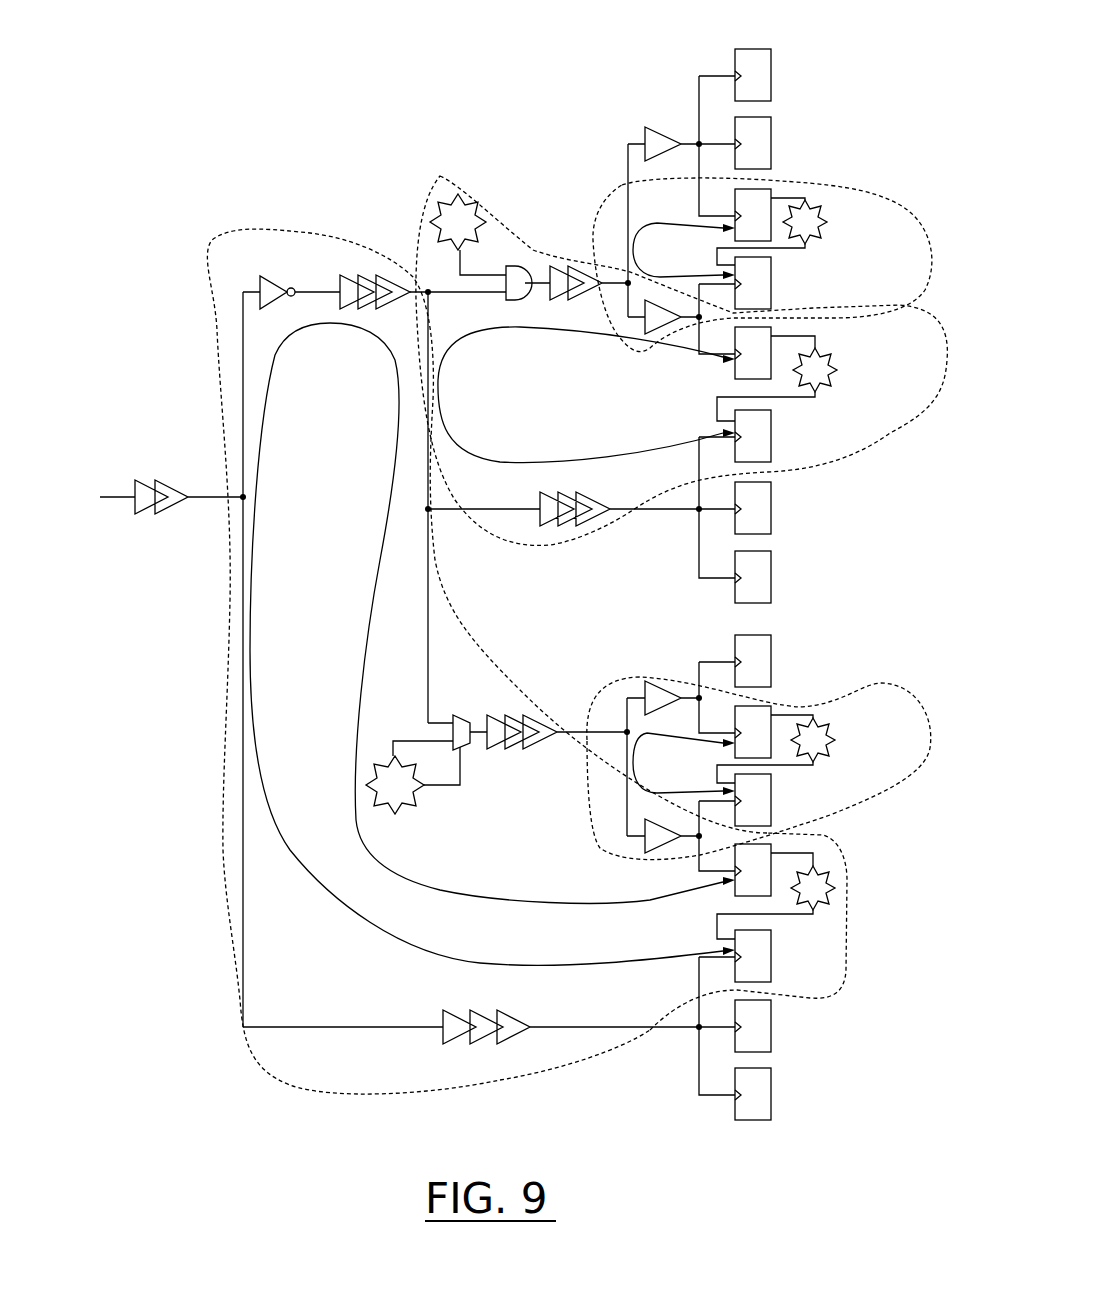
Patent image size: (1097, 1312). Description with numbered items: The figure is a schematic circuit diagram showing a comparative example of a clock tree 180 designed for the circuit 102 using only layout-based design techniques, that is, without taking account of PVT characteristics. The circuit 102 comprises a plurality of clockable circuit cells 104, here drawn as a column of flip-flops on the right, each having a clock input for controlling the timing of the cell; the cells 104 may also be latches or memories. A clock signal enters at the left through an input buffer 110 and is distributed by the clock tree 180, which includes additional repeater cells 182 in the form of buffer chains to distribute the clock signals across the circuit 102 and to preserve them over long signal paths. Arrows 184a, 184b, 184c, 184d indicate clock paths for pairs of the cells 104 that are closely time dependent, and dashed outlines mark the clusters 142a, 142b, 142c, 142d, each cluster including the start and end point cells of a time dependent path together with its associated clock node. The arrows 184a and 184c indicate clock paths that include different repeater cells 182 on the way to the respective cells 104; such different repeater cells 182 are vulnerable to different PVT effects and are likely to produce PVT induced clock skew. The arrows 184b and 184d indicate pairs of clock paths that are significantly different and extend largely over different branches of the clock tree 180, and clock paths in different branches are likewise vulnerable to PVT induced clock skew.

The circuit 102 is at (184, 114).
The clockable circuit cells 104 is at (771, 48).
The clock input buffer 110 is at (120, 493).
The clock tree 180 is at (250, 230).
The repeater cells 182 is at (663, 128).
The arrow 184a is at (657, 223).
The arrow 184b is at (468, 332).
The arrow 184c is at (630, 778).
The arrow 184d is at (440, 888).
The cluster 142a is at (882, 190).
The cluster 142b is at (838, 473).
The cluster 142c is at (880, 686).
The cluster 142d is at (823, 1002).